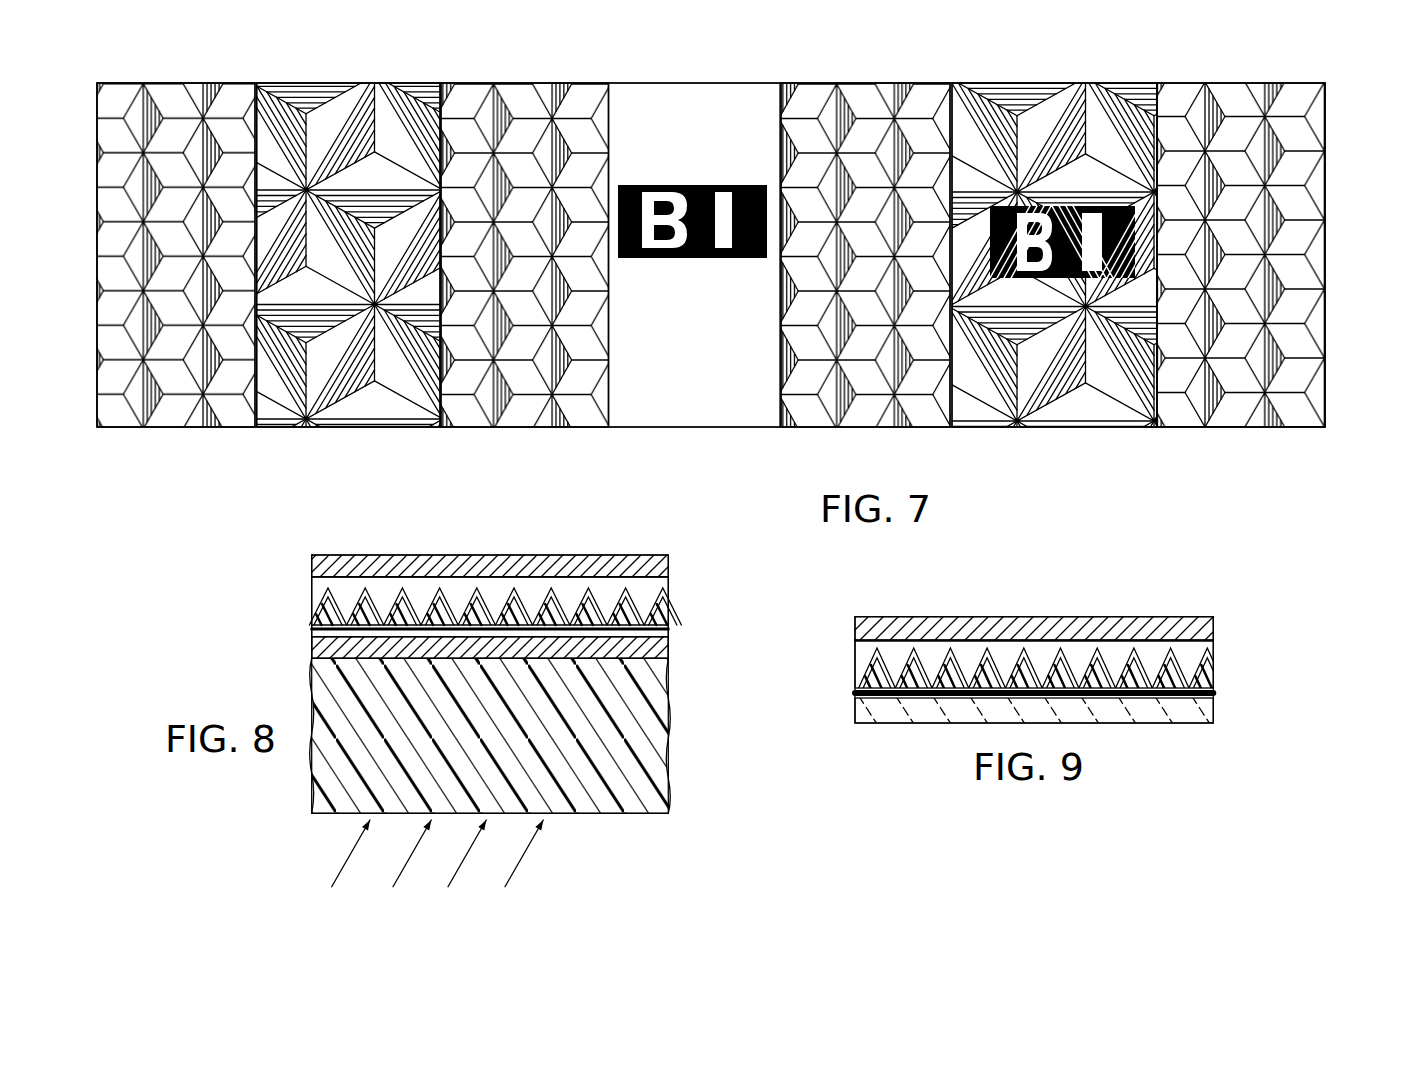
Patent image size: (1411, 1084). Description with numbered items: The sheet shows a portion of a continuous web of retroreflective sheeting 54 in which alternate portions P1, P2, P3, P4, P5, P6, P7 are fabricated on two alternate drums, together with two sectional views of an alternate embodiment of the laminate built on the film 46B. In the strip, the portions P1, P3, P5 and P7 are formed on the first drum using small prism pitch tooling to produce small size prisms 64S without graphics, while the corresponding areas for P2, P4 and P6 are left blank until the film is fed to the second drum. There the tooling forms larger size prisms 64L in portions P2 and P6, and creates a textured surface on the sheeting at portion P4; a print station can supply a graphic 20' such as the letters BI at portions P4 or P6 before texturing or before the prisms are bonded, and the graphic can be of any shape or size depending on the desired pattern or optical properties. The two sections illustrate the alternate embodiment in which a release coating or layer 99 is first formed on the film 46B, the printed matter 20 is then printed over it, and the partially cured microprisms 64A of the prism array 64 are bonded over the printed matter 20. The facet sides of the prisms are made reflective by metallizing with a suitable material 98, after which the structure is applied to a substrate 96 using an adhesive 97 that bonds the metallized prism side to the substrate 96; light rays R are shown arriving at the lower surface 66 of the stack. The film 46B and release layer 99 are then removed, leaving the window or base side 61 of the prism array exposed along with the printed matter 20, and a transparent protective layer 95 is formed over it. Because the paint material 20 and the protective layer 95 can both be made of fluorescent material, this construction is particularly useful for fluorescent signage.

In FIG. 7, the small size prisms 64S is at (173, 83).
In FIG. 7, the larger size prisms 64L is at (329, 92).
In FIG. 7, the graphic 20' is at (902, 156).
In FIG. 7, the film 46B is at (1330, 117).
In FIG. 8, the film 46B is at (668, 767).
In FIG. 7, the portion P1 is at (165, 427).
In FIG. 7, the portion P2 is at (327, 427).
In FIG. 7, the portion P3 is at (512, 427).
In FIG. 7, the portion P4 is at (677, 427).
In FIG. 7, the portion P5 is at (852, 427).
In FIG. 7, the portion P6 is at (1047, 427).
In FIG. 7, the portion P7 is at (1232, 427).
In FIG. 8, the substrate 96 is at (334, 547).
In FIG. 9, the substrate 96 is at (1214, 623).
In FIG. 8, the adhesive 97 is at (380, 585).
In FIG. 9, the adhesive 97 is at (960, 657).
In FIG. 8, the printed matter 20 is at (495, 577).
In FIG. 9, the printed matter 20 is at (1040, 632).
In FIG. 8, the prisms 64 is at (528, 612).
In FIG. 9, the prisms 64 is at (1112, 680).
In FIG. 8, the metallizing material 98 is at (567, 595).
In FIG. 9, the metallizing material 98 is at (885, 670).
In FIG. 8, the partially cured microprisms 64A is at (610, 608).
In FIG. 9, the partially cured microprisms 64A is at (1167, 680).
In FIG. 8, the retroreflective sheeting 54 is at (276, 643).
In FIG. 8, the window or base side 61 is at (306, 652).
In FIG. 8, the release coating or layer 99 is at (668, 642).
In FIG. 8, the bottom surface 66 is at (332, 815).
In FIG. 8, the incident light rays R is at (522, 856).
In FIG. 9, the transparent protective layer 95 is at (1214, 713).